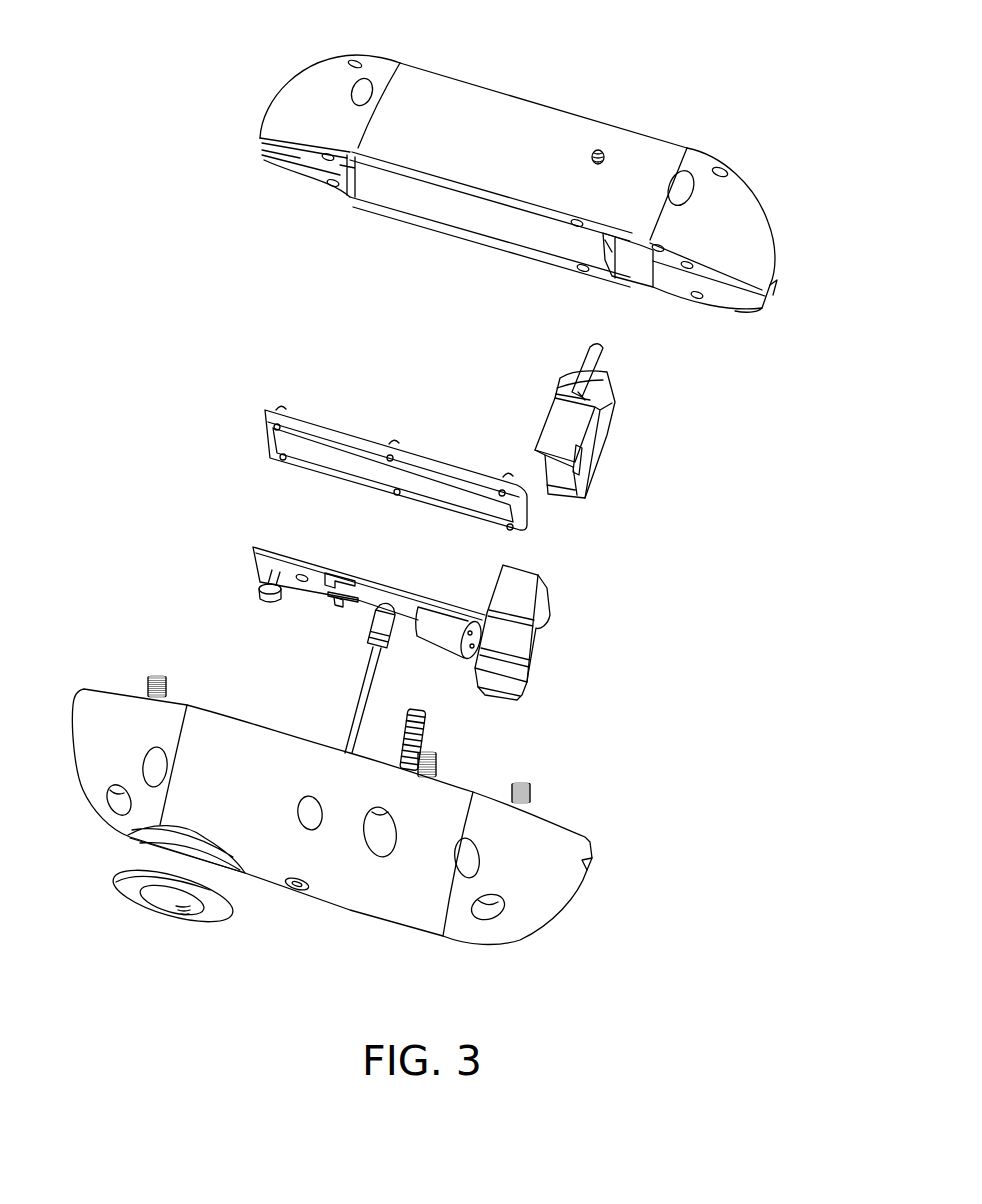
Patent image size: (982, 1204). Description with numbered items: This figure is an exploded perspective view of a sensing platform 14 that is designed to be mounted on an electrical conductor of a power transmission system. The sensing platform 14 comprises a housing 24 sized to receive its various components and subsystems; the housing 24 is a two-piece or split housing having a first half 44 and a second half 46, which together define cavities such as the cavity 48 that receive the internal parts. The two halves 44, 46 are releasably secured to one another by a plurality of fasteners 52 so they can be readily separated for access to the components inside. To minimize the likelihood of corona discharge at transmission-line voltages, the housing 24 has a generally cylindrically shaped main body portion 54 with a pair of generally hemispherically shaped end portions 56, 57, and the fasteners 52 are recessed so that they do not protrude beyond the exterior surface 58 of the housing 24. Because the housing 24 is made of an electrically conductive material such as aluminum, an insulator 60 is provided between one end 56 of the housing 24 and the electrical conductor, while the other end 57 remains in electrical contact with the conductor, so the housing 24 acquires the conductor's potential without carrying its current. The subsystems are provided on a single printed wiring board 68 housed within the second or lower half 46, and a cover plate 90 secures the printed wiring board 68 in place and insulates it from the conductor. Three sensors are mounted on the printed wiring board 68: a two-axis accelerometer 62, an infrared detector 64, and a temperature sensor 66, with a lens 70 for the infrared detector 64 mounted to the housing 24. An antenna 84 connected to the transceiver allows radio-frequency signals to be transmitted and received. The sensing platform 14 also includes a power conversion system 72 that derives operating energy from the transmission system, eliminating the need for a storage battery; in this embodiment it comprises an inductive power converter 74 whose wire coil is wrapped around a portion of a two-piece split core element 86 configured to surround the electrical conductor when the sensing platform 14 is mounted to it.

The sensing platform 14 is at (168, 152).
The housing 24 is at (632, 120).
The first half 44 is at (752, 190).
The second half 46 is at (550, 910).
The cavity 48 is at (450, 208).
The fasteners 52 is at (520, 780).
The main body portion 54 is at (492, 78).
The end portion 56 is at (308, 80).
The end portion 57 is at (778, 262).
The exterior surface 58 is at (523, 153).
The insulator 60 is at (300, 160).
The two-axis accelerometer 62 is at (333, 600).
The infrared detector 64 is at (258, 592).
The temperature sensor 66 is at (365, 588).
The printed wiring board 68 is at (270, 547).
The lens 70 is at (133, 903).
The power conversion system 72 is at (547, 568).
The inductive power converter 74 is at (586, 453).
The antenna 84 is at (350, 690).
The split core element 86 is at (563, 512).
The cover plate 90 is at (263, 423).